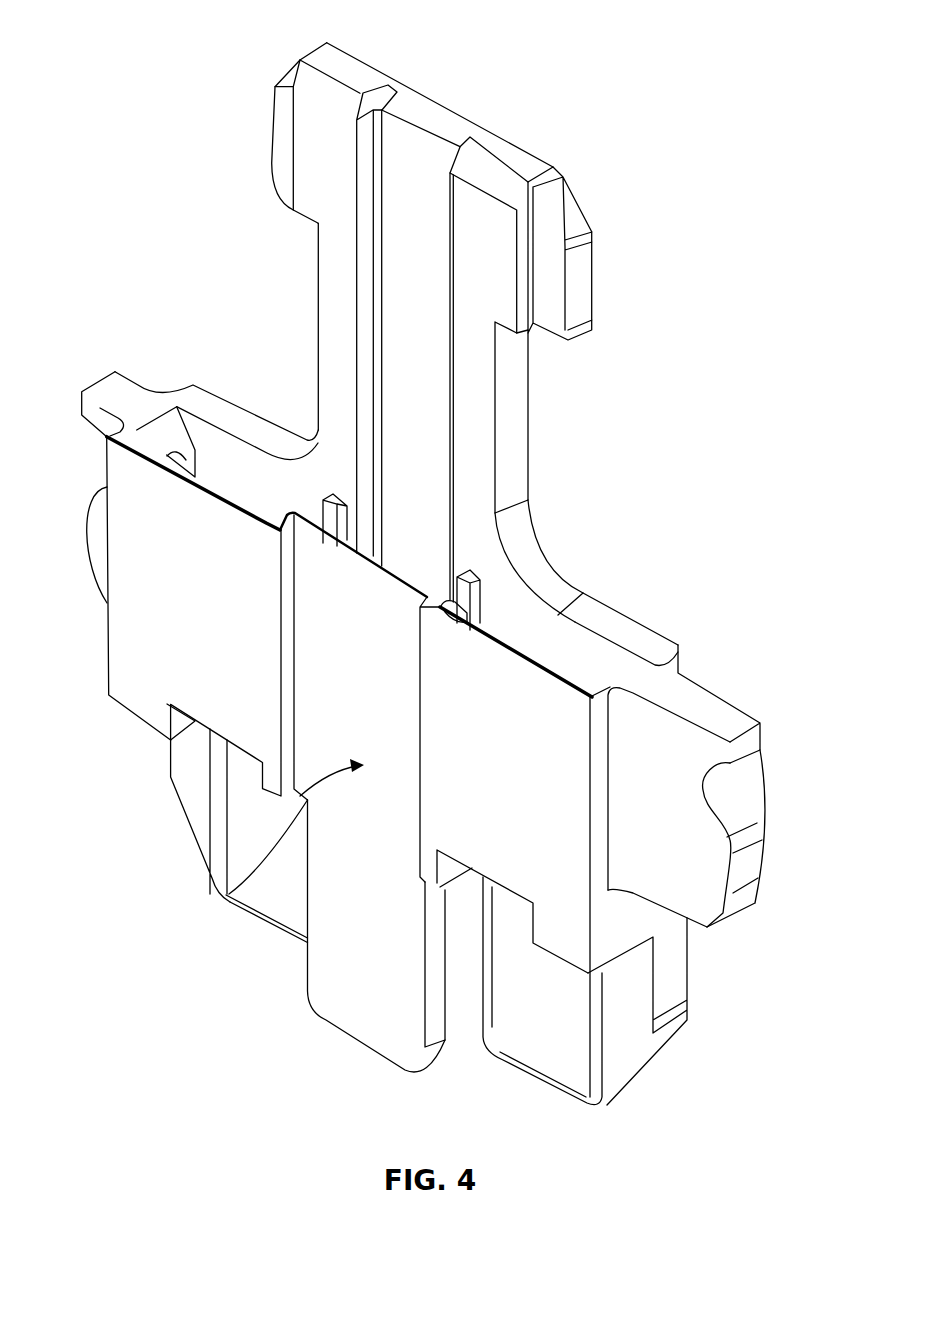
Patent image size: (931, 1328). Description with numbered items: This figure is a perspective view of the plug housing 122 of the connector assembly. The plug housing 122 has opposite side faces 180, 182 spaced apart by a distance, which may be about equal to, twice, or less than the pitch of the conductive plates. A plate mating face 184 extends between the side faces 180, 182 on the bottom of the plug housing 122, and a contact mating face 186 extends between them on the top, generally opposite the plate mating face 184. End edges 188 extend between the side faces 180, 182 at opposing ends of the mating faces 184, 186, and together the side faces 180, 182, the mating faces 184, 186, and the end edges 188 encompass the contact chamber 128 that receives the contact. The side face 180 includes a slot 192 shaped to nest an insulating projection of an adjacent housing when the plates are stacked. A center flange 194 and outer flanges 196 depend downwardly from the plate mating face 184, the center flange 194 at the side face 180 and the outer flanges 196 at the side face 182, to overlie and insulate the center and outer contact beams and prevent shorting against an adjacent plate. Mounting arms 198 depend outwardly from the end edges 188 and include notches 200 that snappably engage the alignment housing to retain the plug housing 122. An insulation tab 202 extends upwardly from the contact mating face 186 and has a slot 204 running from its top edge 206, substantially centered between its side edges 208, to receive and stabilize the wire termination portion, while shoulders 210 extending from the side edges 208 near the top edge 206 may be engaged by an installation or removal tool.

The plug housing 122 is at (118, 708).
The contact chamber 128 is at (522, 630).
The side face 180 is at (131, 603).
The side face 182 is at (222, 396).
The plate mating face 184 is at (140, 727).
The contact mating face 186 is at (125, 440).
The end edges 188 is at (110, 686).
The slot 192 is at (215, 897).
The center flange 194 is at (352, 1028).
The outer flanges 196 is at (266, 925).
The mounting arms 198 is at (720, 902).
The notches 200 is at (752, 786).
The insulation tab 202 is at (496, 414).
The slot 204 is at (405, 140).
The top edge 206 is at (516, 160).
The side edges 208 is at (318, 290).
The shoulders 210 is at (302, 128).